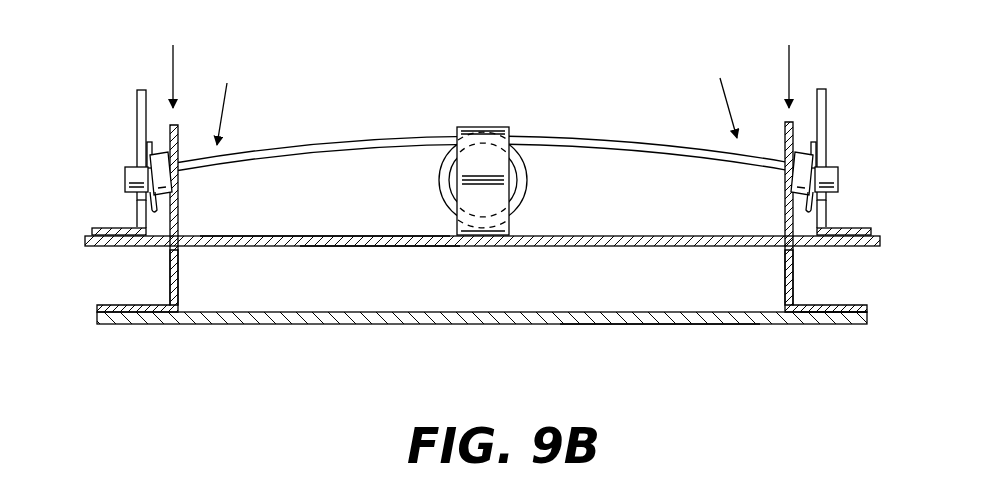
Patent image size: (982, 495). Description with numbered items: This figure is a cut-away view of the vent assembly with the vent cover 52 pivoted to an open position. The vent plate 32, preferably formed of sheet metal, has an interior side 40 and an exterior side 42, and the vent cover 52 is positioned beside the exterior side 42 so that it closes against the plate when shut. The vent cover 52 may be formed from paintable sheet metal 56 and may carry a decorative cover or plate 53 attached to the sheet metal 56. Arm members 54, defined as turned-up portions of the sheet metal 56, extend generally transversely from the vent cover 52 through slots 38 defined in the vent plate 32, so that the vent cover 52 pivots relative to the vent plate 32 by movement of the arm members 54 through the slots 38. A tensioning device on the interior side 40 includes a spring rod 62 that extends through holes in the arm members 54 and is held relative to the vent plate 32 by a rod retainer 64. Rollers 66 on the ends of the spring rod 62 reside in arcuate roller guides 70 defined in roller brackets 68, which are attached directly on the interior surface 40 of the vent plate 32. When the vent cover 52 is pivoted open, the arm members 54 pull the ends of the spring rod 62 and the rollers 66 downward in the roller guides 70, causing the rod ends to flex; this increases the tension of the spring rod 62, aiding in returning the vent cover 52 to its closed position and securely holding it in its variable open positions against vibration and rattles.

The vent plate 32 is at (103, 248).
The slots 38 is at (180, 233).
The interior side 40 is at (350, 235).
The exterior side 42 is at (383, 247).
The vent cover 52 is at (307, 324).
The decorative cover or plate 53 is at (658, 324).
The arm members 54 is at (180, 275).
The sheet metal 56 is at (830, 316).
The spring rod 62 is at (338, 145).
The rod retainer 64 is at (482, 127).
The rollers 66 is at (125, 182).
The roller brackets 68 is at (138, 120).
The roller guides 70 is at (137, 208).